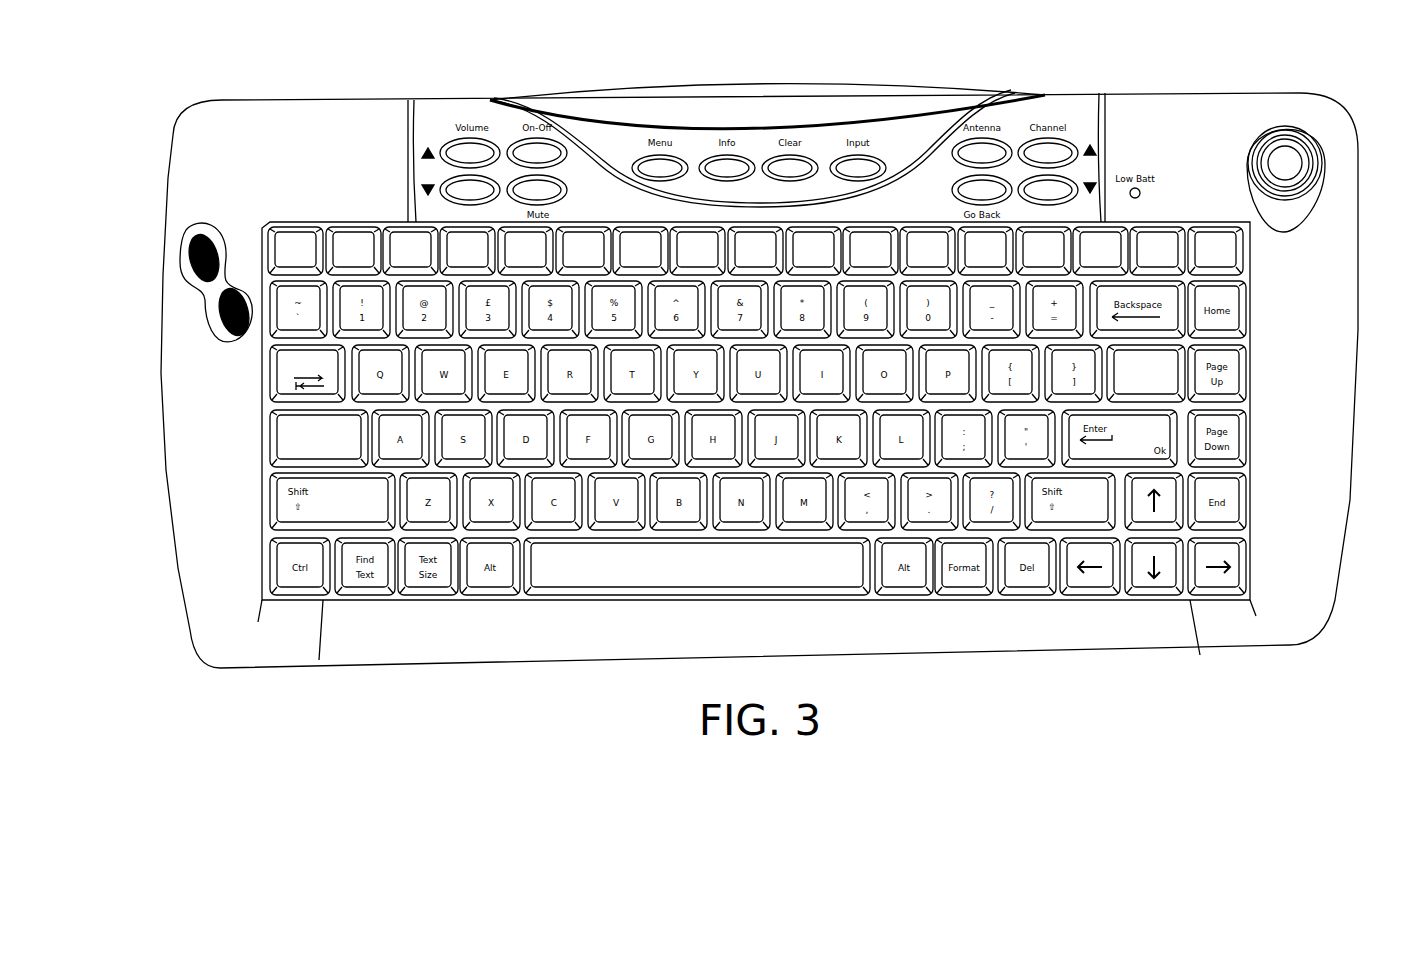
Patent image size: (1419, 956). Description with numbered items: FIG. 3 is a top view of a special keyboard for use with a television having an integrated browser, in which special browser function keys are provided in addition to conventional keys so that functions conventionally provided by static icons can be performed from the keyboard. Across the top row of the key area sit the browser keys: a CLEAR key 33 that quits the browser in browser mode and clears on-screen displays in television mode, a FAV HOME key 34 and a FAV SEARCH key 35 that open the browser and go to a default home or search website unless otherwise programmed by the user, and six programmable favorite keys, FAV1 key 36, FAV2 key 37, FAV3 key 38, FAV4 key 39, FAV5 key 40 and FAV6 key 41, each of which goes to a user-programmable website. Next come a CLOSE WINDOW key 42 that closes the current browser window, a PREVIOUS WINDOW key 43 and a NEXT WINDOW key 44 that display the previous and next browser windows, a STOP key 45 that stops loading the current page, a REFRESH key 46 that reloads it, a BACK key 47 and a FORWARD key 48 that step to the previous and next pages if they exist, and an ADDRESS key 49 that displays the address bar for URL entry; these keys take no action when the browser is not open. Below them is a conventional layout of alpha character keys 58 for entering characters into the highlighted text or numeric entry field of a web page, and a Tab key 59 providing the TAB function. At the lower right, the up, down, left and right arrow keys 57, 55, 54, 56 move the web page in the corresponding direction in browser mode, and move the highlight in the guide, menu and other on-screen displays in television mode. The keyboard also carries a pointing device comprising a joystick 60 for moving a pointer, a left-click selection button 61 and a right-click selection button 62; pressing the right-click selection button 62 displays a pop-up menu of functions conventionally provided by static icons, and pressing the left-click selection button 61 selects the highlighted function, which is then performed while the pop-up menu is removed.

The CLEAR key 33 is at (296, 228).
The FAV HOME key 34 is at (354, 228).
The FAV SEARCH key 35 is at (411, 228).
The FAV1 key 36 is at (469, 228).
The FAV2 key 37 is at (527, 228).
The FAV3 key 38 is at (585, 228).
The FAV4 key 39 is at (642, 228).
The FAV5 key 40 is at (700, 228).
The FAV6 key 41 is at (757, 228).
The CLOSE WINDOW key 42 is at (815, 228).
The PREVIOUS WINDOW key 43 is at (873, 228).
The NEXT WINDOW key 44 is at (931, 228).
The STOP key 45 is at (988, 228).
The REFRESH key 46 is at (1046, 228).
The BACK key 47 is at (1104, 228).
The FORWARD key 48 is at (1161, 228).
The ADDRESS key 49 is at (1219, 228).
The Left arrow key 54 is at (1090, 596).
The Down arrow key 55 is at (1155, 596).
The Right arrow key 56 is at (1218, 596).
The Up arrow key 57 is at (1178, 507).
The alpha character keys 58 is at (372, 447).
The Tab key 59 is at (272, 380).
The joystick 60 is at (1325, 163).
The left-click selection button 61 is at (188, 256).
The right-click selection button 62 is at (222, 309).